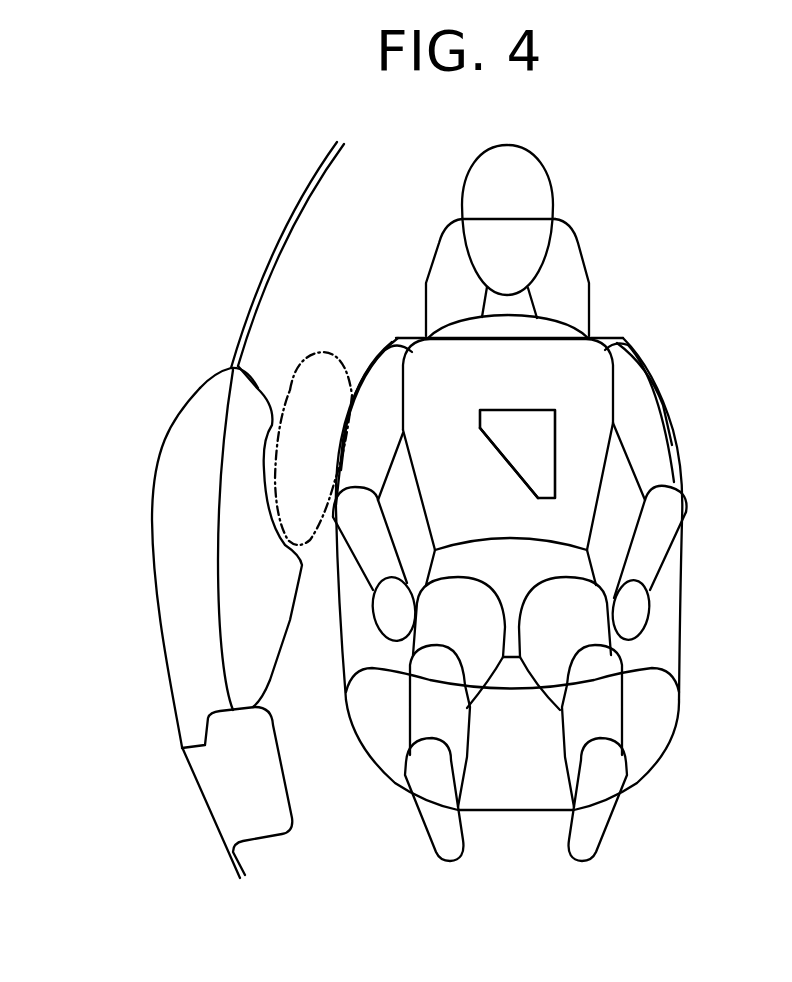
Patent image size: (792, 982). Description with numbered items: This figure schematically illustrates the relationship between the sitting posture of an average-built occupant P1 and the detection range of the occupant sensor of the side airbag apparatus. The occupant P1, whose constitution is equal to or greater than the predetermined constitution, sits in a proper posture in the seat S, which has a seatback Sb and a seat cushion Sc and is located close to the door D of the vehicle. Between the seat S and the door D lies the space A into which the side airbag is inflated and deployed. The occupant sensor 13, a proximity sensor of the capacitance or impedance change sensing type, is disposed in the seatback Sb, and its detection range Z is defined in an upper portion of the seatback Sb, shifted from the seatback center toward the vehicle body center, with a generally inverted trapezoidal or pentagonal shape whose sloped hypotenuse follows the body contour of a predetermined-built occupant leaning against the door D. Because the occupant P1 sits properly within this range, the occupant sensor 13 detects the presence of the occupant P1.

The average-built occupant P1 is at (543, 162).
The seat S is at (536, 513).
The door D is at (203, 397).
The space A is at (320, 352).
The occupant sensor 13 is at (555, 428).
The detection range Z is at (544, 455).
The seatback Sb is at (660, 640).
The seat cushion Sc is at (655, 740).